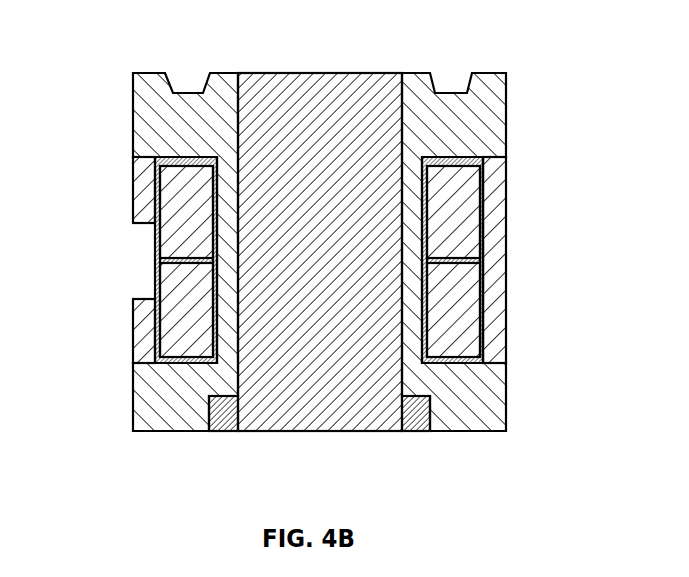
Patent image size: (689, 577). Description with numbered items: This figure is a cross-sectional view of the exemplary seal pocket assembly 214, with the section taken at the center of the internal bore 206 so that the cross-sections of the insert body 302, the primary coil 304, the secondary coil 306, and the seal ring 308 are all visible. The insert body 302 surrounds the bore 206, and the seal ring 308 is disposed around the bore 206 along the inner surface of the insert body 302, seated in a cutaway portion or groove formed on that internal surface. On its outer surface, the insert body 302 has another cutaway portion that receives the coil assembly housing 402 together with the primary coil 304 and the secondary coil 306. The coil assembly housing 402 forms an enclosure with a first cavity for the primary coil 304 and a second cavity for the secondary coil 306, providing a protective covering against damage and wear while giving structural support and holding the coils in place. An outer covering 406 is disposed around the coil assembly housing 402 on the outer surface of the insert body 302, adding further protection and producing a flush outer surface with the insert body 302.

The internal bore 206 is at (340, 92).
The seal pocket assembly 214 is at (470, 50).
The insert body 302 is at (150, 130).
The primary coil 304 is at (165, 192).
The secondary coil 306 is at (152, 300).
The seal ring 308 is at (225, 431).
The coil assembly housing 402 is at (158, 262).
The outer covering 406 is at (506, 258).